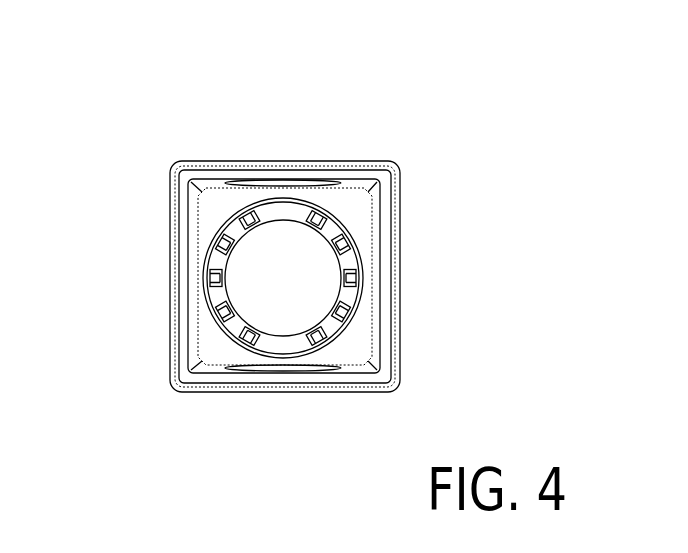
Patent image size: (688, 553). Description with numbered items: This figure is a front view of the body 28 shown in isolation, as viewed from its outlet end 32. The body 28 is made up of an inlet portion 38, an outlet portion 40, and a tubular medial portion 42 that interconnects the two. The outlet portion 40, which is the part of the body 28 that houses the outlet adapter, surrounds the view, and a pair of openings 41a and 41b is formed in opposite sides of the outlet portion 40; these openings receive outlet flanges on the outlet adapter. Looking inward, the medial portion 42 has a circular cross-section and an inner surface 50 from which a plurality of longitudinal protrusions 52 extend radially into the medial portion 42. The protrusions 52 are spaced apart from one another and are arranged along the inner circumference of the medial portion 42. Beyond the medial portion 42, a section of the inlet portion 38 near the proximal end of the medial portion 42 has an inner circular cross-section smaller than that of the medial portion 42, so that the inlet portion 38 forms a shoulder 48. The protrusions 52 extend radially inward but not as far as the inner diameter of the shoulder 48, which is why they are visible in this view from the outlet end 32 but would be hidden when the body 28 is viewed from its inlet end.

The body 28 is at (392, 148).
The outlet end 32 is at (385, 225).
The inlet portion 38 is at (293, 223).
The outlet portion 40 is at (385, 348).
The opening 41a is at (277, 183).
The opening 41b is at (288, 373).
The tubular medial portion 42 is at (233, 220).
The shoulder 48 is at (270, 348).
The inner surface 50 is at (222, 317).
The longitudinal protrusions 52 is at (352, 278).